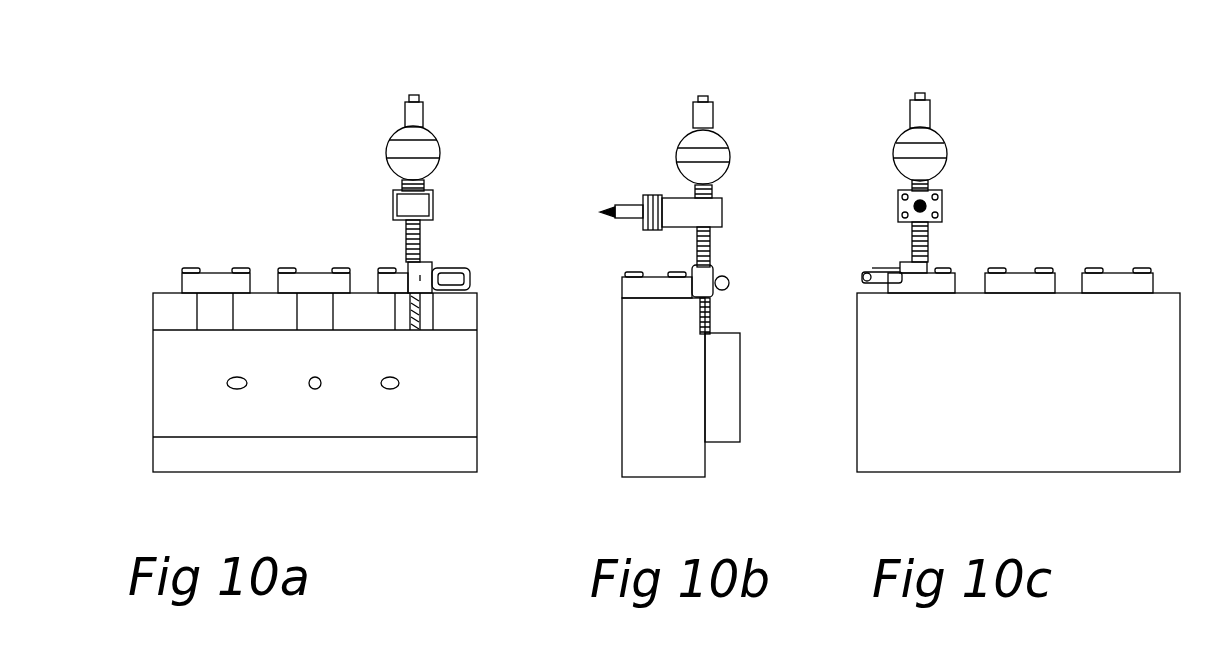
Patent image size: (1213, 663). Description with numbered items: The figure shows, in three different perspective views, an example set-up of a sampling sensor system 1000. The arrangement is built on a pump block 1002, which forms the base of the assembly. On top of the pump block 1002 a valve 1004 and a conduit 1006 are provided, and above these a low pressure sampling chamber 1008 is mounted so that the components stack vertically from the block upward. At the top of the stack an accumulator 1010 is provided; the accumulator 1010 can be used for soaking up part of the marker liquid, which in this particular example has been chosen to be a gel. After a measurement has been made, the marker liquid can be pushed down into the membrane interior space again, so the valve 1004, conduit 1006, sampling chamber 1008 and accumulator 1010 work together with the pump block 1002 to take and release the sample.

In FIG. 10A, the sampling sensor system 1000 is at (230, 136).
In FIG. 10B, the sampling sensor system 1000 is at (628, 130).
In FIG. 10C, the sampling sensor system 1000 is at (1093, 185).
In FIG. 10A, the pump block 1002 is at (167, 447).
In FIG. 10B, the pump block 1002 is at (633, 447).
In FIG. 10C, the pump block 1002 is at (873, 446).
In FIG. 10A, the valve 1004 is at (473, 287).
In FIG. 10B, the valve 1004 is at (729, 283).
In FIG. 10C, the valve 1004 is at (862, 278).
In FIG. 10A, the conduit 1006 is at (418, 242).
In FIG. 10B, the conduit 1006 is at (711, 242).
In FIG. 10C, the conduit 1006 is at (928, 242).
In FIG. 10A, the low pressure sampling chamber 1008 is at (410, 205).
In FIG. 10B, the low pressure sampling chamber 1008 is at (722, 205).
In FIG. 10C, the low pressure sampling chamber 1008 is at (942, 205).
In FIG. 10A, the accumulator 1010 is at (428, 151).
In FIG. 10B, the accumulator 1010 is at (722, 152).
In FIG. 10C, the accumulator 1010 is at (945, 151).